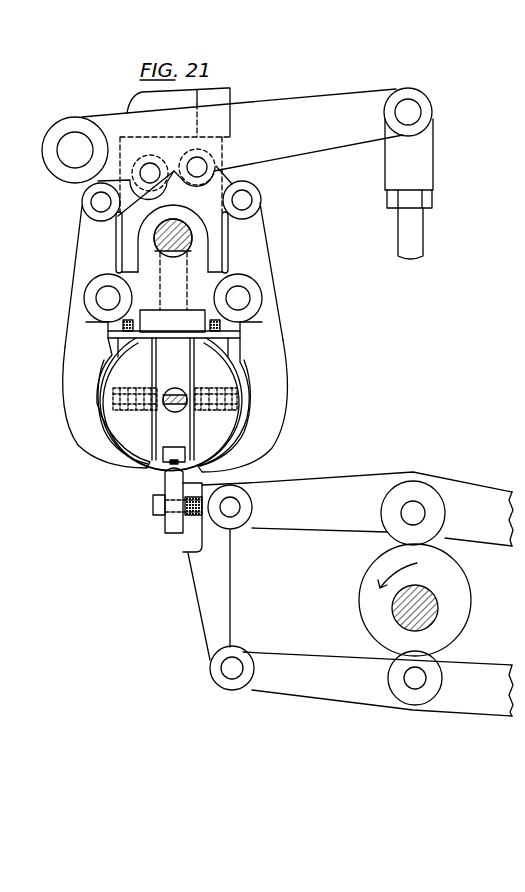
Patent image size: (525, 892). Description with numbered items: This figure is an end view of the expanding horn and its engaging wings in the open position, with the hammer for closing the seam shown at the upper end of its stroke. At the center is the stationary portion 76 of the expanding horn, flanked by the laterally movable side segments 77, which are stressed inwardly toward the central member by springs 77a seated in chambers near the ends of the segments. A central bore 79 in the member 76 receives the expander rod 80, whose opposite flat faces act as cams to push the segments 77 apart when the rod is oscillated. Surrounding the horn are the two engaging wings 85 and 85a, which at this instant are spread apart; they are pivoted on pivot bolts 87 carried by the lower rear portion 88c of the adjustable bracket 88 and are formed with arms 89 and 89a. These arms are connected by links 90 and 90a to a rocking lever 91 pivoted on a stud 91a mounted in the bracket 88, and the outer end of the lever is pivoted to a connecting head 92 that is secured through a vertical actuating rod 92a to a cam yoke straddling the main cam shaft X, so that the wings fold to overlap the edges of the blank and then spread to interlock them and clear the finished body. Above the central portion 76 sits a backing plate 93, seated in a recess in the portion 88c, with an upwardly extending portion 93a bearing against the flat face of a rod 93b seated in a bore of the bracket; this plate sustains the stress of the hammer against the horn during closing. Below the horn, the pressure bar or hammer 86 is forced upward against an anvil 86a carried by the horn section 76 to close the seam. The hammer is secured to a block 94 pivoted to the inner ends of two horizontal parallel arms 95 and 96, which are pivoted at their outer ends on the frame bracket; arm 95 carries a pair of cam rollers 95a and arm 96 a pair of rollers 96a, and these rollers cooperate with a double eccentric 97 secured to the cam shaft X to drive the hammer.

The central or stationary portion of the expanding horn 76 is at (181, 361).
The laterally movable side segments 77 is at (138, 362).
The springs 77a is at (220, 412).
The central bore 79 is at (177, 412).
The expander rod 80 is at (175, 392).
The engaging wing 85 is at (70, 361).
The engaging wing 85a is at (276, 351).
The pressure bar or hammer 86 is at (174, 523).
The anvil 86a is at (168, 458).
The pivot bolts 87 is at (102, 298).
The adjustable bracket 88 is at (153, 102).
The lower rear portion of the bracket 88c is at (143, 261).
The arm of wing 89 is at (82, 244).
The arm of wing 89a is at (260, 243).
The link 90 is at (138, 200).
The link 90a is at (215, 200).
The rocking lever 91 is at (293, 143).
The stud 91a is at (73, 152).
The connecting head 92 is at (420, 164).
The vertical actuating rod 92a is at (415, 241).
The backing plate 93 is at (160, 313).
The upwardly extending portion of backing plate 93a is at (183, 253).
The rod 93b is at (175, 223).
The plate or block 94 is at (185, 544).
The horizontal parallel arm 95 is at (315, 521).
The cam rollers 95a is at (395, 522).
The horizontal parallel arm 96 is at (303, 662).
The rollers 96a is at (400, 673).
The double eccentric 97 is at (453, 578).
The cam shaft X is at (418, 615).